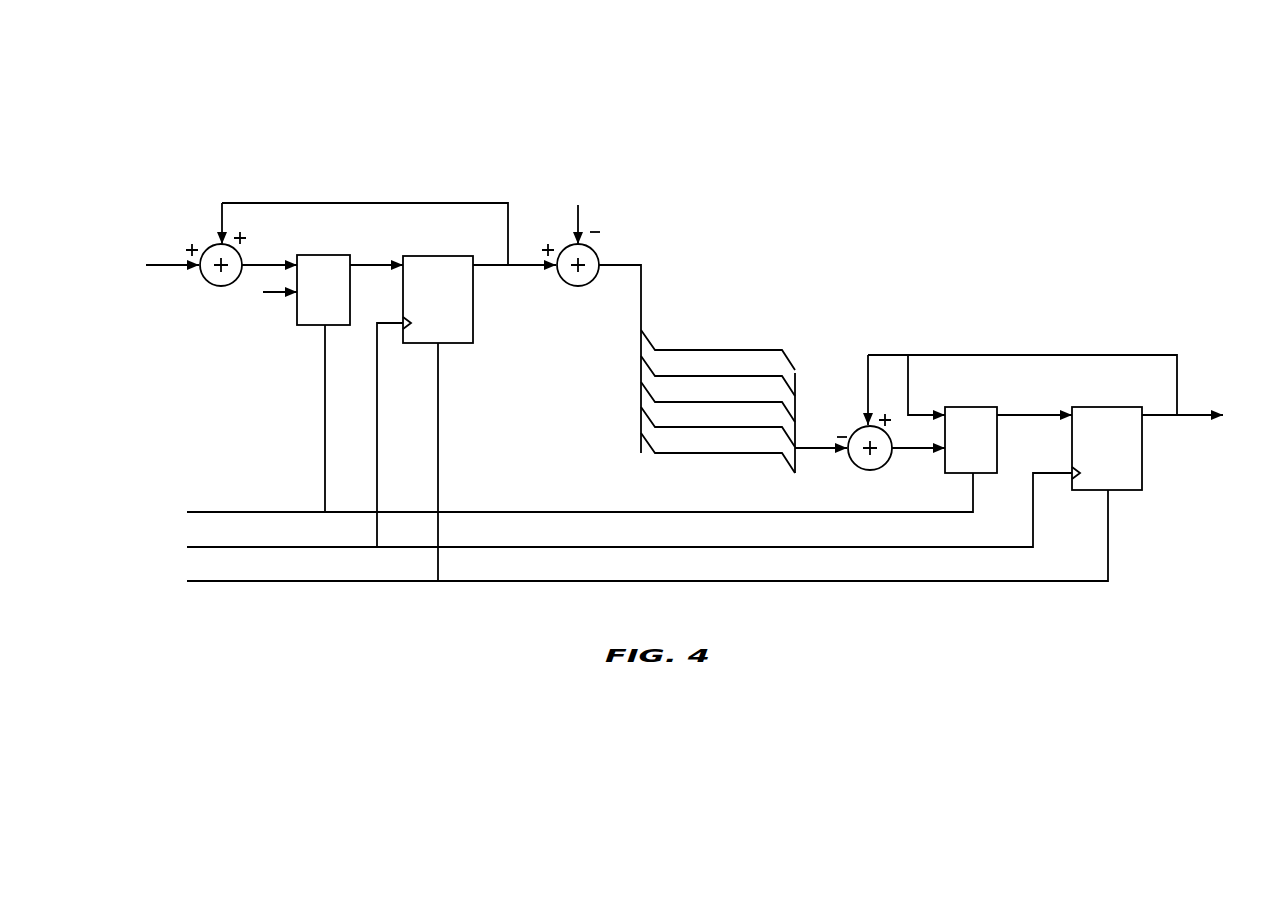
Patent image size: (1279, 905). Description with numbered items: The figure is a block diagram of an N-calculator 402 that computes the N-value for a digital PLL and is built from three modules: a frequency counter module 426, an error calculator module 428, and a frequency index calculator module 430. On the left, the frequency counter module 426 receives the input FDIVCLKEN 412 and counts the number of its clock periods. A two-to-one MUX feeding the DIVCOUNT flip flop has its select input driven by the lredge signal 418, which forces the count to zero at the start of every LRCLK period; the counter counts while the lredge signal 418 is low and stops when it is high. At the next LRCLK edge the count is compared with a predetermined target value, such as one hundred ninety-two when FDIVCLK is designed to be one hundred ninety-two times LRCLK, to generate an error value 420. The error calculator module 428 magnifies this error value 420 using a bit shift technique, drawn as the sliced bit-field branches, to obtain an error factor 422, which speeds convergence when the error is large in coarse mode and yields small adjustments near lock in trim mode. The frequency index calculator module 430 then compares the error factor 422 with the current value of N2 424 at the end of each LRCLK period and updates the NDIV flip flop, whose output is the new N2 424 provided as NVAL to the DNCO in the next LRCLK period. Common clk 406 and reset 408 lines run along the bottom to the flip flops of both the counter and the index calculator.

The N-calculator 402 is at (1122, 121).
The FDIVCLKEN 412 is at (116, 264).
The frequency counter module 426 is at (371, 251).
The error calculator module 428 is at (739, 225).
The error value 420 is at (659, 348).
The error factor 422 is at (754, 387).
The frequency index calculator module 430 is at (1007, 398).
The N2 424 is at (1202, 412).
The lredge signal 418 is at (530, 423).
The clk 406 is at (594, 439).
The reset 408 is at (603, 467).